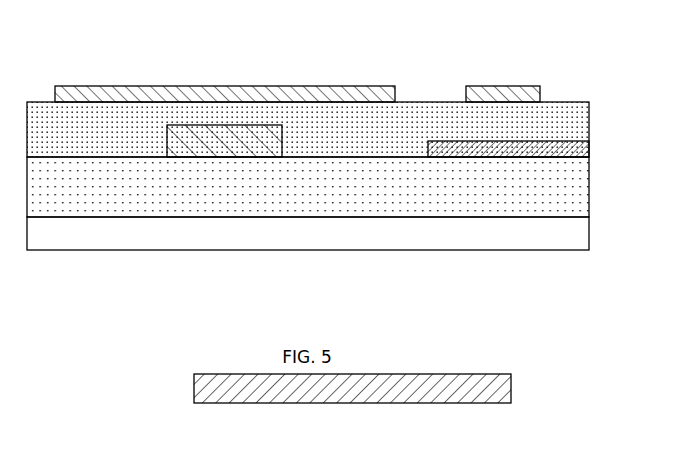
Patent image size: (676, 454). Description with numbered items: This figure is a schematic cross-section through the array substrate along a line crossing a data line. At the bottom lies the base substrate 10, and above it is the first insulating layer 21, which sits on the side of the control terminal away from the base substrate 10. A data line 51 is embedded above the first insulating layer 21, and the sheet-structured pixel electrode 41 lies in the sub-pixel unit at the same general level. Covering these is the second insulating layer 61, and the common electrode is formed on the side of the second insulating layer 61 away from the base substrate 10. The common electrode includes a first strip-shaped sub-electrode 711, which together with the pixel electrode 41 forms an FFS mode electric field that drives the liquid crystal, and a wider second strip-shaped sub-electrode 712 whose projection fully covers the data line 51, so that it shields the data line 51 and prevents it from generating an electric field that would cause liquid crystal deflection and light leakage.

The base substrate 10 is at (191, 228).
The first insulating layer 21 is at (386, 190).
The second insulating layer 61 is at (361, 128).
The data line 51 is at (241, 152).
The pixel electrode 41 is at (499, 152).
The second strip-shaped sub-electrode 712 is at (230, 97).
The first strip-shaped sub-electrode 711 is at (505, 86).